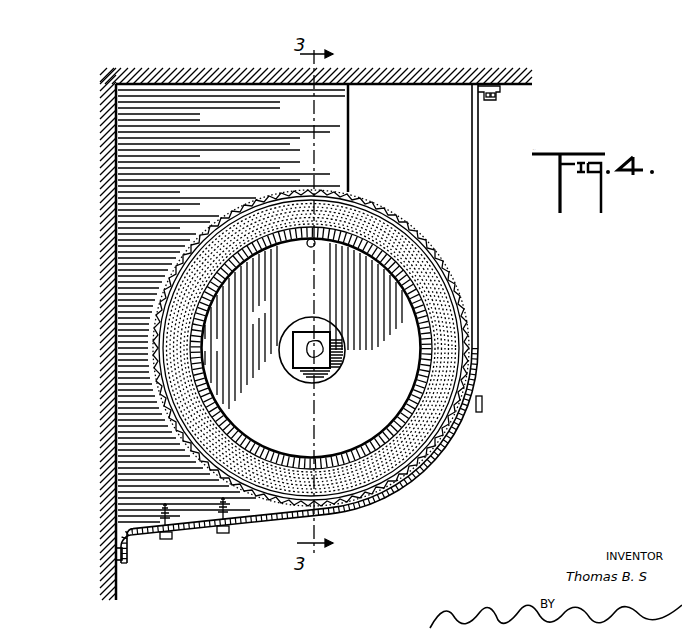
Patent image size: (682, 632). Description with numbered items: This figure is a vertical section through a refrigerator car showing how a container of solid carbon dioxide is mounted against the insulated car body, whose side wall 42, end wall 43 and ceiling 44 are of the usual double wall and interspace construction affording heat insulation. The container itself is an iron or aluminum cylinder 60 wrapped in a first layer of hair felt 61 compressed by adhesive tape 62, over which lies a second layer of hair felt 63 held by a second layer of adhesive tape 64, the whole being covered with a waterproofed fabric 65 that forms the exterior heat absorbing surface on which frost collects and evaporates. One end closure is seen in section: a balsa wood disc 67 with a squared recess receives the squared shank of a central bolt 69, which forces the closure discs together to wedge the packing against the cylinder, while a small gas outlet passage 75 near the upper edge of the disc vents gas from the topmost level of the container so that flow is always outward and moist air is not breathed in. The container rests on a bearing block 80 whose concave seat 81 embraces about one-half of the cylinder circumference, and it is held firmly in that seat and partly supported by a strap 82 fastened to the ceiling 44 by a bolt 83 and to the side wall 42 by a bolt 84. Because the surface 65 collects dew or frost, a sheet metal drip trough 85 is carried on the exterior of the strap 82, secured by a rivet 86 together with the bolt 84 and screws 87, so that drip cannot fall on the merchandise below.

The side wall 42 is at (162, 605).
The end wall 43 is at (114, 178).
The ceiling 44 is at (409, 84).
The cylinder 60 is at (437, 367).
The layer of hair felt 61 is at (432, 380).
The adhesive tape 62 is at (450, 343).
The second layer of hair felt 63 is at (454, 325).
The second layer of adhesive tape 64 is at (452, 291).
The waterproofed fabric 65 is at (418, 232).
The disc 67 is at (303, 331).
The central bolt 69 is at (333, 343).
The gas outlet passage 75 is at (308, 247).
The bearing block 80 is at (340, 152).
The concave seat 81 is at (240, 210).
The strap 82 is at (478, 170).
The bolt 83 is at (493, 99).
The bolt 84 is at (175, 578).
The drip trough 85 is at (410, 483).
The rivet 86 is at (481, 407).
The screw 87 is at (223, 540).